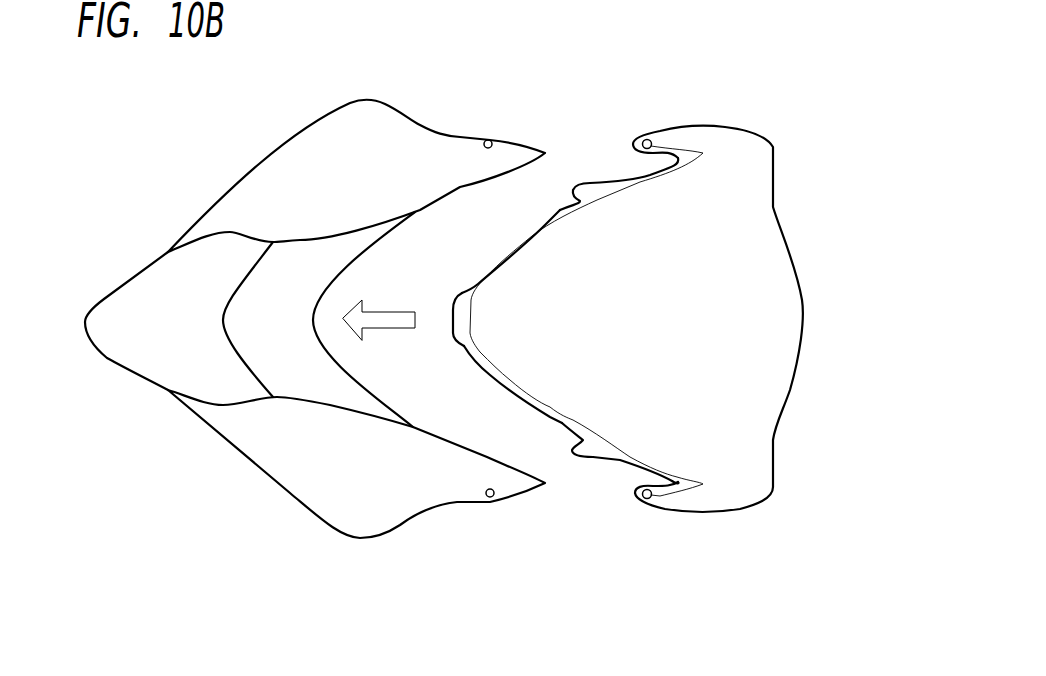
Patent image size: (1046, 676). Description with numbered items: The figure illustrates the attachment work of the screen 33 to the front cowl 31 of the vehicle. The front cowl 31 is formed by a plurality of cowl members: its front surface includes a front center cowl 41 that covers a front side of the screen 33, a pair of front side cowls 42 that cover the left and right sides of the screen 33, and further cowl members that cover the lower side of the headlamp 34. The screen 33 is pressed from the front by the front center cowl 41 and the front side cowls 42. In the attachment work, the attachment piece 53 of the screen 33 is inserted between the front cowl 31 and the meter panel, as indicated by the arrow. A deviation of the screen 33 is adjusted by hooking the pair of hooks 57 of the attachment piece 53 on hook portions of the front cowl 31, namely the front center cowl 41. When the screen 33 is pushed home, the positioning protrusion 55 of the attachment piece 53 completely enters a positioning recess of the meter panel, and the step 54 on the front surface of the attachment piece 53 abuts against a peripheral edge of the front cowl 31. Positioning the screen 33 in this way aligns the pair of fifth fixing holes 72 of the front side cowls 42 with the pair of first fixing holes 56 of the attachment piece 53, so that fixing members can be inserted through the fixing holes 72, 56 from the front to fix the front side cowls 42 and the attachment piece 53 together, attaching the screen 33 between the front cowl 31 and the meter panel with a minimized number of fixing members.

The front cowl 31 is at (222, 167).
The screen 33 is at (778, 254).
The headlamp 34 is at (137, 373).
The front center cowl 41 is at (260, 360).
The front side cowls 42 is at (366, 113).
The attachment piece 53 is at (531, 237).
The step 54 is at (613, 190).
The positioning protrusion 55 is at (451, 321).
The first fixing holes 56 is at (649, 139).
The hooks 57 is at (590, 182).
The fifth fixing holes 72 is at (492, 141).